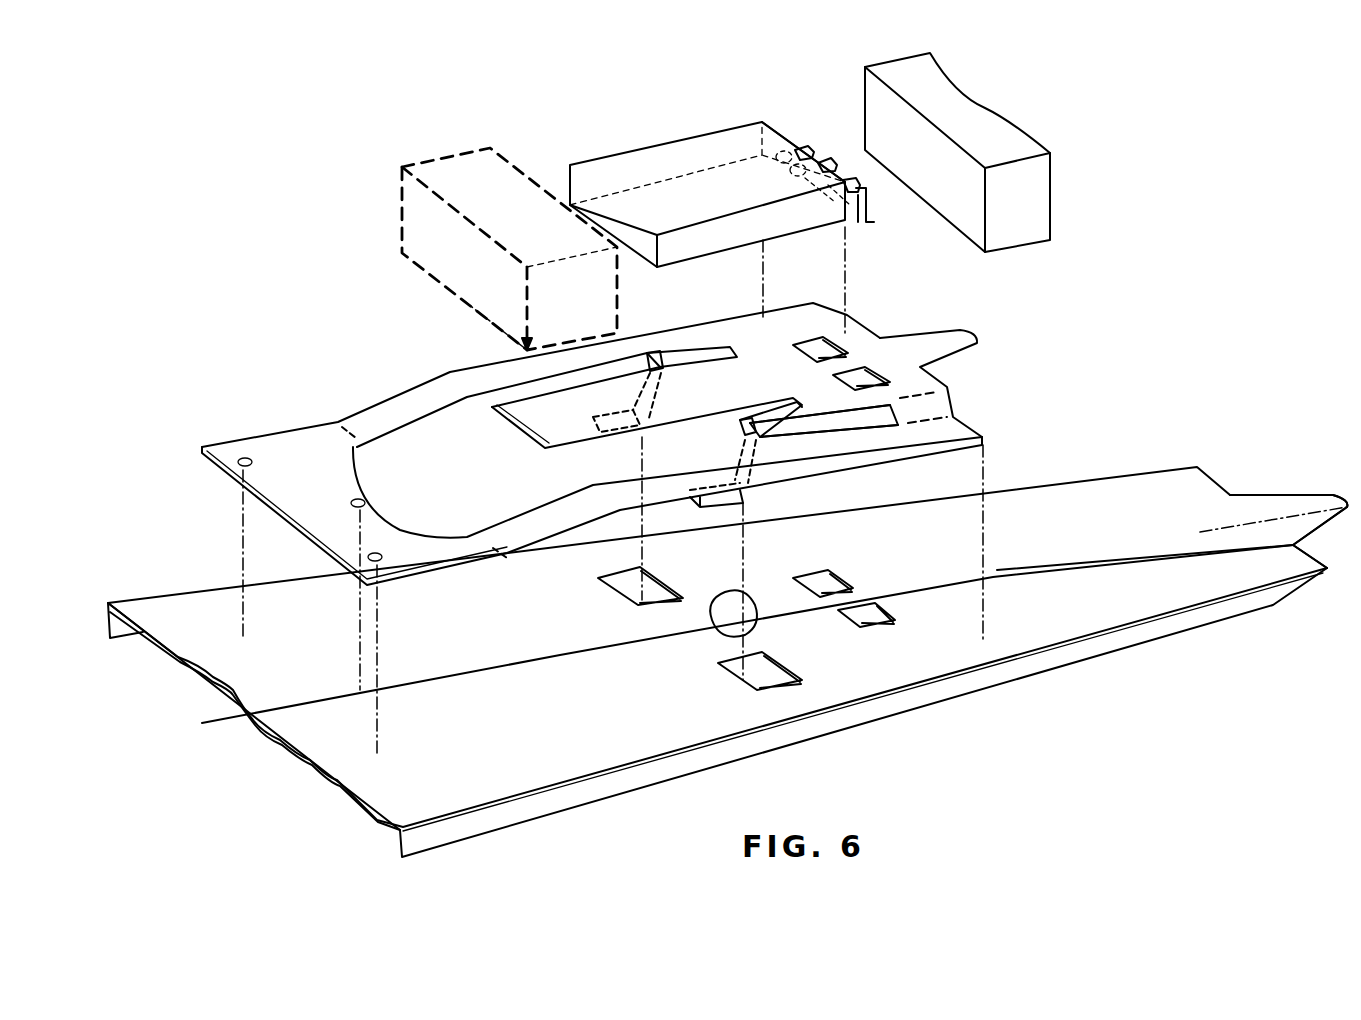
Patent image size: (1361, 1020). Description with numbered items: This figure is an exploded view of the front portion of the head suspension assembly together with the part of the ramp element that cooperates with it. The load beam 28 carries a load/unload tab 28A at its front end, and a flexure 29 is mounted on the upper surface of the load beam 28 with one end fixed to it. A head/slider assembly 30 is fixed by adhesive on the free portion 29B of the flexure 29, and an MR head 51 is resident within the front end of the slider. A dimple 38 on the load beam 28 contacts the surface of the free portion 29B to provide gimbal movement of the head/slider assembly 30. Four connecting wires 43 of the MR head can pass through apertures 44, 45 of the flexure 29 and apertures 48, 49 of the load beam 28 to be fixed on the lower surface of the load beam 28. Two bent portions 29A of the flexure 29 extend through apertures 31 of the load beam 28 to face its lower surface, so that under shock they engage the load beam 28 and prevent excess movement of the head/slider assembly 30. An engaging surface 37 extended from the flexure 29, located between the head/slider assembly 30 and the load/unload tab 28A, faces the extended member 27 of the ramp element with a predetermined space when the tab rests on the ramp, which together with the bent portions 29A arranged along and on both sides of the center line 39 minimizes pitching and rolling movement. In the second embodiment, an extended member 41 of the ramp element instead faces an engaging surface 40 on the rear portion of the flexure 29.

The extended member 27 is at (1002, 132).
The load beam 28 is at (1115, 497).
The load/unload tab 28A is at (1285, 503).
The flexure 29 is at (390, 407).
The bent portions 29A is at (612, 430).
The free portion 29B is at (702, 400).
The head/slider assembly 30 is at (677, 157).
The apertures 31 is at (613, 590).
The engaging surface 37 is at (977, 340).
The dimple 38 is at (727, 607).
The center line 39 is at (1050, 562).
The engaging surface 40 is at (523, 422).
The extended member 41 is at (470, 162).
The connecting wires 43 is at (830, 162).
The aperture 44 is at (827, 352).
The aperture 45 is at (870, 373).
The aperture 48 is at (843, 580).
The aperture 49 is at (878, 627).
The MR head 51 is at (770, 140).